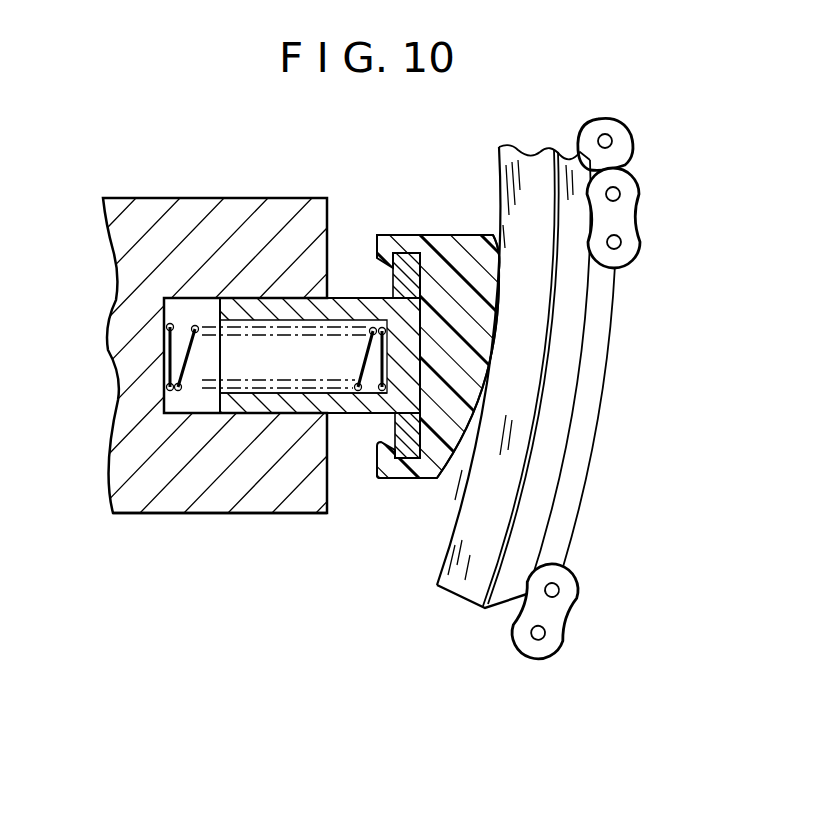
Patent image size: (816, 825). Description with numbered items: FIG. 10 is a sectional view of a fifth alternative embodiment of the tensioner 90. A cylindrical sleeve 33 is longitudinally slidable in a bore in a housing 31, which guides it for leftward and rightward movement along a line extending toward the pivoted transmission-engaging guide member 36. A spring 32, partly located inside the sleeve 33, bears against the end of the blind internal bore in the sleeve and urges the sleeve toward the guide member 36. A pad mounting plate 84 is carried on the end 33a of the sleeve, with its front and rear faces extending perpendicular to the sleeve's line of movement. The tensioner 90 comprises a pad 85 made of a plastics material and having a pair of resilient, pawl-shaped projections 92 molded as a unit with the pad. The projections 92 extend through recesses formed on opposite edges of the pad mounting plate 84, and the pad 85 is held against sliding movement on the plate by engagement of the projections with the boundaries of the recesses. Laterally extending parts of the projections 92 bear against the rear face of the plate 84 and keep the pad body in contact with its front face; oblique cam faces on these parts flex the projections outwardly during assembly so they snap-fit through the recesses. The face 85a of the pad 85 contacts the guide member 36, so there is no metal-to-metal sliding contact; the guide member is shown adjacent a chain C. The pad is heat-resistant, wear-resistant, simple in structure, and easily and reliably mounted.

The tensioner 90 is at (252, 192).
The housing 31 is at (128, 518).
The cylindrical sleeve 33 is at (340, 422).
The end of the sleeve 33a is at (362, 410).
The spring 32 is at (178, 414).
The pad 85 is at (443, 225).
The face of the pad 85a is at (457, 460).
The pad mounting plate 84 is at (427, 479).
The pawl-shaped projections 92 is at (373, 247).
The guide member 36 is at (490, 614).
The chain C is at (586, 601).